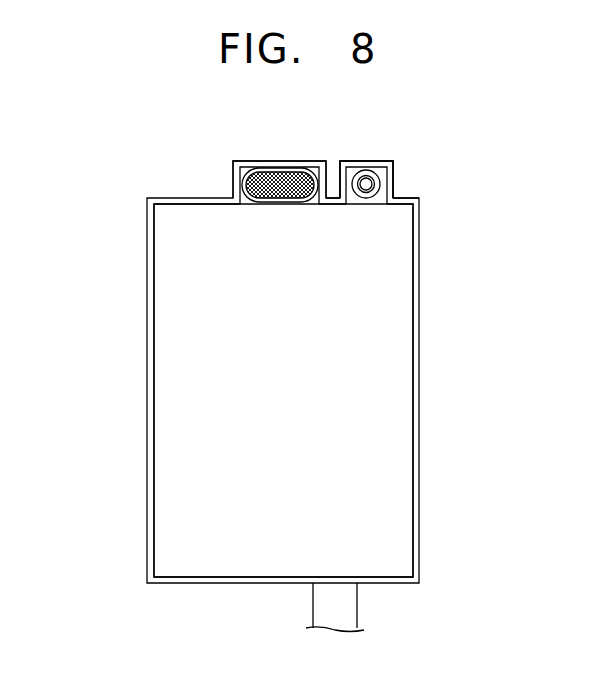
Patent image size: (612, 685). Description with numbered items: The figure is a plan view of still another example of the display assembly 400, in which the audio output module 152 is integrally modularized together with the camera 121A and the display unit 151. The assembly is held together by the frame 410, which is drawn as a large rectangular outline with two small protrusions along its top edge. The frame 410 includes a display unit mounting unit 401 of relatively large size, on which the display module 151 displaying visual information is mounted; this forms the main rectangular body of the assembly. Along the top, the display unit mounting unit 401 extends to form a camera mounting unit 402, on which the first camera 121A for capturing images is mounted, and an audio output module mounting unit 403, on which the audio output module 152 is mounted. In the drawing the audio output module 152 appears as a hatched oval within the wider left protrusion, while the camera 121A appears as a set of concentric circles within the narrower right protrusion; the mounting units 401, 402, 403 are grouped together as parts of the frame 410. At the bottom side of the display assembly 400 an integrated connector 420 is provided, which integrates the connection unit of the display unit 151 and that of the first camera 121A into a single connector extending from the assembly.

The display assembly 400 is at (101, 220).
The display unit mounting unit 401 is at (416, 246).
The camera mounting unit 402 is at (393, 180).
The audio output module mounting unit 403 is at (320, 186).
The frame 410 is at (503, 166).
The display unit 151 is at (402, 388).
The audio output module 152 is at (280, 185).
The first camera 121A is at (366, 180).
The integrated connector 420 is at (350, 609).